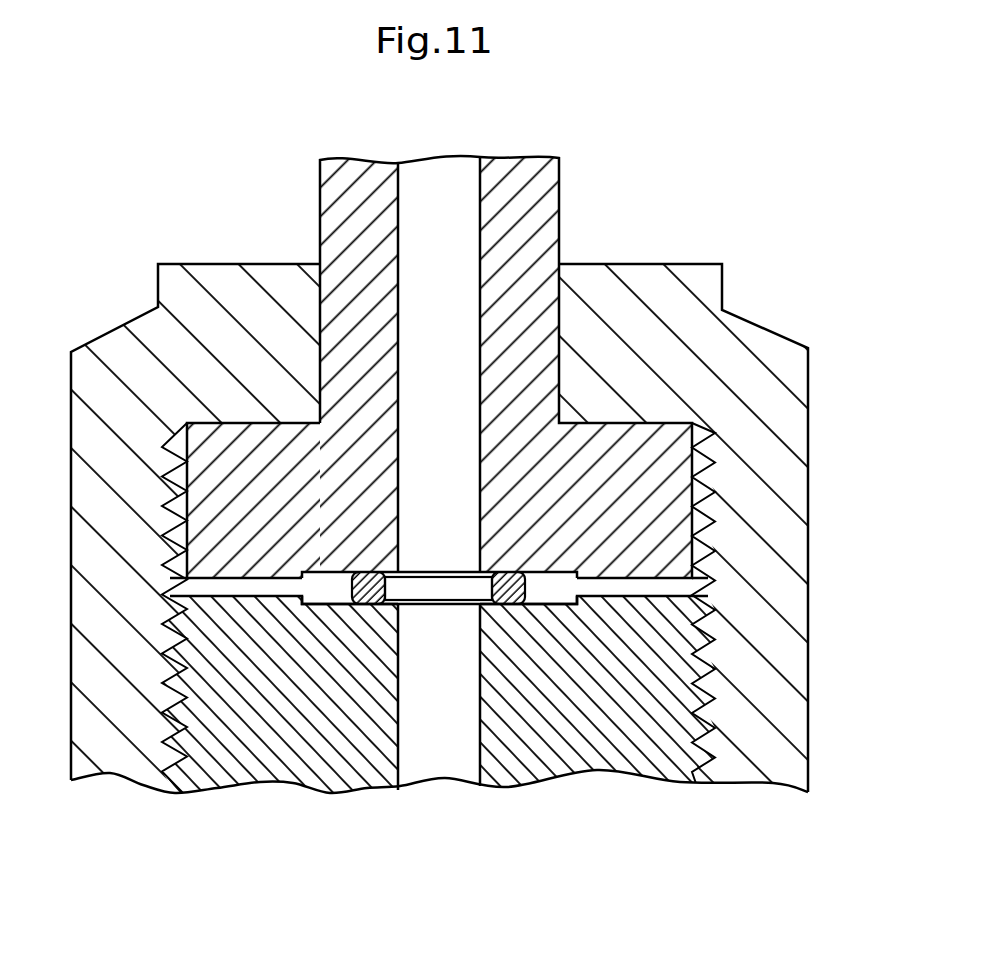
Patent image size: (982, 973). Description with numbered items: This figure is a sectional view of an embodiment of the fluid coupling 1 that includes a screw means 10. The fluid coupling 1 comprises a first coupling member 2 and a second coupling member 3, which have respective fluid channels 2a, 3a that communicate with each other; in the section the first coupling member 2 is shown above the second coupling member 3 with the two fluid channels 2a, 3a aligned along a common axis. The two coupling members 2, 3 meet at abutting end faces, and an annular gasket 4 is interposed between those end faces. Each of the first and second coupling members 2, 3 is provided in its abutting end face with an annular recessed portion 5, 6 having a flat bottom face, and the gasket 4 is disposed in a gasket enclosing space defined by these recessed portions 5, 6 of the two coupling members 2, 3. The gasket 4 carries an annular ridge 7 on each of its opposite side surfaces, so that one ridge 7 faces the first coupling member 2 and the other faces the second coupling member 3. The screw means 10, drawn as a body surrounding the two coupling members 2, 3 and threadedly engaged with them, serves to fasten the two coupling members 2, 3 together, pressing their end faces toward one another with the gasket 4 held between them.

The fluid coupling 1 is at (450, 474).
The first coupling member 2 is at (262, 452).
The fluid channel 2a is at (400, 225).
The second coupling member 3 is at (243, 770).
The fluid channel 3a is at (397, 765).
The annular gasket 4 is at (362, 575).
The annular recessed portion 5 is at (328, 576).
The annular recessed portion 6 is at (304, 606).
The annular ridge 7 is at (390, 553).
The screw means 10 is at (790, 452).